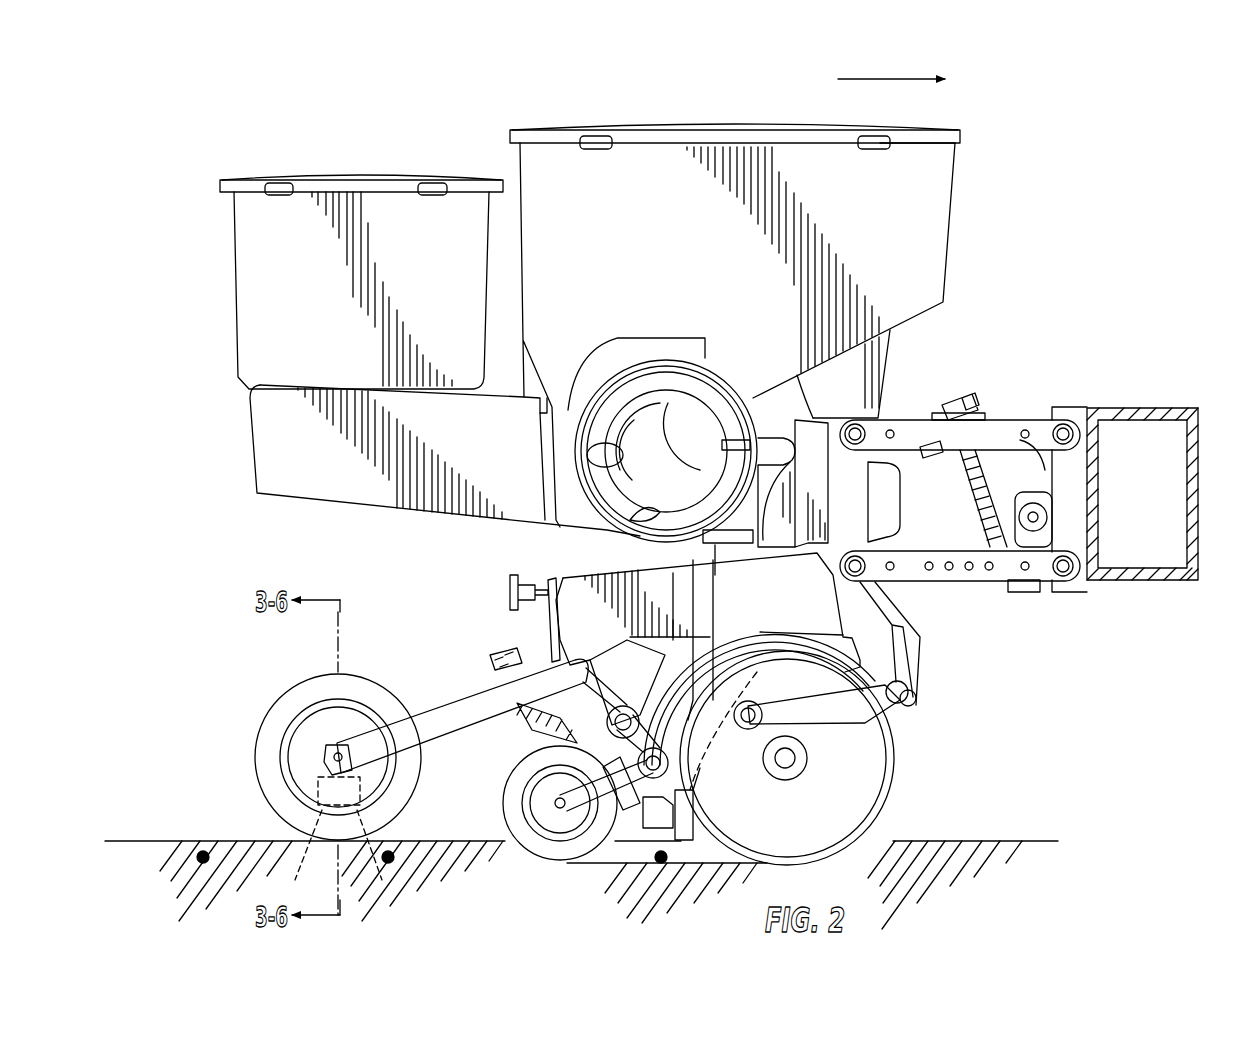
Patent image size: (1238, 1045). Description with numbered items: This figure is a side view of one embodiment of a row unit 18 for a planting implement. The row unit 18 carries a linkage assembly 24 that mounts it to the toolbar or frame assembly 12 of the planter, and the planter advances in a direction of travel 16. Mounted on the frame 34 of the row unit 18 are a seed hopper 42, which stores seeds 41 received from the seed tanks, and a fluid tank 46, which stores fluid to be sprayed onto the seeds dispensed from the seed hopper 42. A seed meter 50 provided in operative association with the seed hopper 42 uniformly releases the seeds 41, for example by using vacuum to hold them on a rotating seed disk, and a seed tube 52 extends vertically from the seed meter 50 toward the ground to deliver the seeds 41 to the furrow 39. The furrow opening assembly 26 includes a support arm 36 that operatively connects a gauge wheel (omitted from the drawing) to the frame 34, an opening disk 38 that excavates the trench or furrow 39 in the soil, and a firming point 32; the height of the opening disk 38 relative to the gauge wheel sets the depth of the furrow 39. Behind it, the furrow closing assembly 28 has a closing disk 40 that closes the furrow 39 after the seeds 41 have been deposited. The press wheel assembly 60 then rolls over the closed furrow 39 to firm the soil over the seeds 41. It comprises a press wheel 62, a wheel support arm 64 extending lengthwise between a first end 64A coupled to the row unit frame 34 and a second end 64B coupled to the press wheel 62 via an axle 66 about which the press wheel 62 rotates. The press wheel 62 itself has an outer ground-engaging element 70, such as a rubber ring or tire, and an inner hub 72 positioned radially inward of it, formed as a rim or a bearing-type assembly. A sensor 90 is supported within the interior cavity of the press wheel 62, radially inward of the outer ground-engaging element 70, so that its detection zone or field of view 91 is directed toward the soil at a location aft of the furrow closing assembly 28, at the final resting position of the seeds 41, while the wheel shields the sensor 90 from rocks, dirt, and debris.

The toolbar or frame assembly 12 is at (1143, 403).
The direction of travel 16 is at (878, 78).
The row unit 18 is at (1062, 250).
The linkage assembly 24 is at (1010, 595).
The furrow opening assembly 26 is at (816, 723).
The furrow closing assembly 28 is at (495, 848).
The firming point 32 is at (692, 836).
The frame 34 is at (313, 487).
The support arm 36 is at (903, 657).
The opening disk 38 is at (848, 800).
The furrow 39 is at (610, 866).
The closing disk 40 is at (558, 848).
The seeds 41 is at (204, 863).
The seed hopper 42 is at (635, 238).
The fluid tank 46 is at (442, 280).
The seed meter 50 is at (735, 362).
The seed tube 52 is at (773, 592).
The press wheel assembly 60 is at (432, 668).
The press wheel 62 is at (430, 686).
The wheel support arm 64 is at (463, 710).
The first end 64A is at (582, 650).
The second end 64B is at (353, 752).
The axle 66 is at (332, 768).
The outer ground-engaging element 70 is at (358, 683).
The inner hub 72 is at (307, 735).
The sensor 90 is at (362, 793).
The detection zone or field of view 91 is at (307, 857).